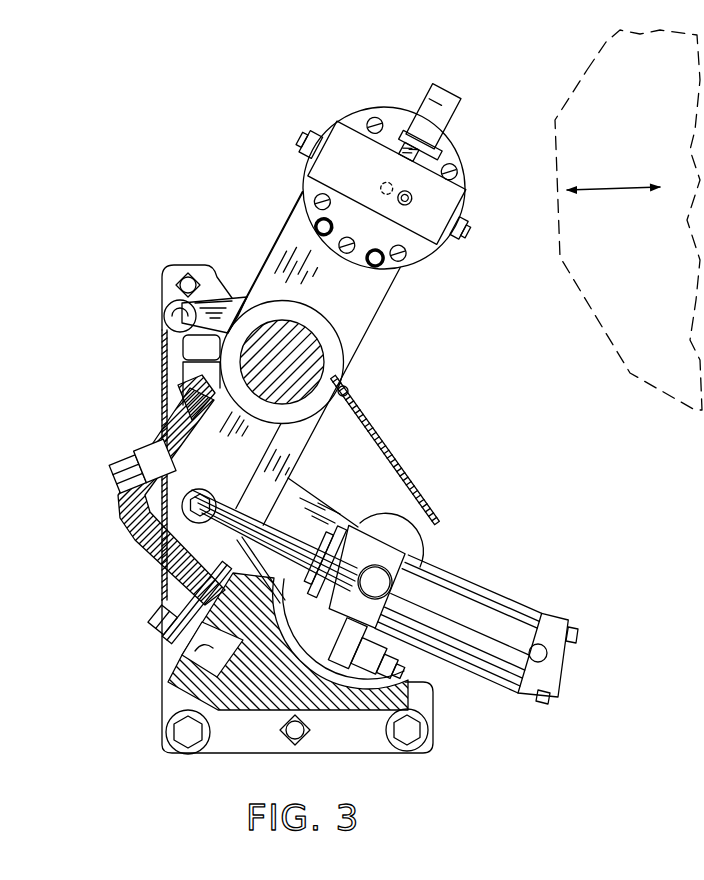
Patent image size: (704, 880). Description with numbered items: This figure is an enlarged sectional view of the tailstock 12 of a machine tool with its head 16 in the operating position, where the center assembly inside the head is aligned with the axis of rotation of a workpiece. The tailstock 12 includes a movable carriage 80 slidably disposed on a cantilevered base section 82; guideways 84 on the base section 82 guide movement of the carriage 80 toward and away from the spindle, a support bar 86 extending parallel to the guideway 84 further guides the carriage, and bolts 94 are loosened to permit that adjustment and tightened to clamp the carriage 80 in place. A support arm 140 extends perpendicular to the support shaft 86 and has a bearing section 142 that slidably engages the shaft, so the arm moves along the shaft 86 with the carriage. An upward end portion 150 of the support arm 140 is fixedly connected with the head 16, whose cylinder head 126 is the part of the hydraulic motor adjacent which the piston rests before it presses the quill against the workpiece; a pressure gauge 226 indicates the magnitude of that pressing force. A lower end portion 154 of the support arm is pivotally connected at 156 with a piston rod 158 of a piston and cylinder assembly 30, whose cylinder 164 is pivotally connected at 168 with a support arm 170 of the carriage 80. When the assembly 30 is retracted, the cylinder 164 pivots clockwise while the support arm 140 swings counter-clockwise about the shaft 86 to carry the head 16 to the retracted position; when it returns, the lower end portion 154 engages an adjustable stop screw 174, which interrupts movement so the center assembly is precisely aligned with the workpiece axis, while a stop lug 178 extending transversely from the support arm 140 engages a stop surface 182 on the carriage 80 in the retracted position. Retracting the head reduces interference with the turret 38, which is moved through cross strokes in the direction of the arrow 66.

The tailstock 12 is at (214, 178).
The head 16 is at (413, 158).
The pressure gauge 226 is at (472, 63).
The turret 38 is at (582, 65).
The cylinder head 126 is at (427, 200).
The arrow 66 is at (613, 180).
The support arm 140 is at (262, 258).
The upward end portion 150 is at (298, 222).
The stop lug 178 is at (177, 315).
The bearing section 142 is at (190, 348).
The stop surface 182 is at (187, 393).
The lower end portion 154 is at (230, 427).
The stop screw 174 is at (165, 455).
The pivotal connection 156 is at (190, 500).
The carriage 80 is at (125, 553).
The bolts 94 is at (160, 615).
The guideways 84 is at (205, 652).
The base section 82 is at (170, 692).
The support bar 86 is at (308, 362).
The piston rod 158 is at (280, 530).
The support arm 170 is at (338, 510).
The pivotal connection 168 is at (380, 585).
The piston and cylinder assembly 30 is at (497, 573).
The cylinder 164 is at (490, 628).